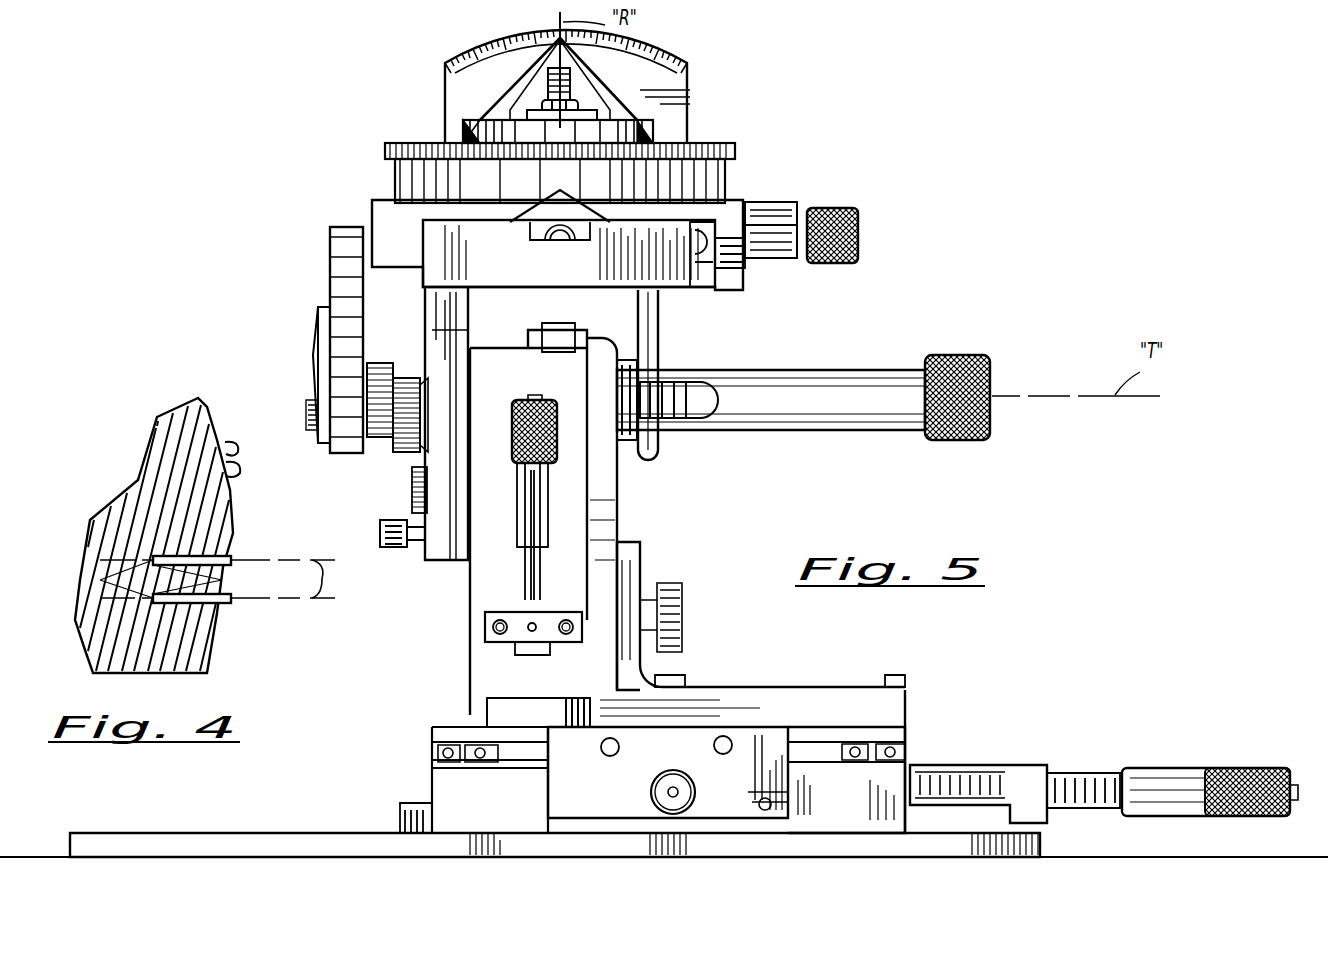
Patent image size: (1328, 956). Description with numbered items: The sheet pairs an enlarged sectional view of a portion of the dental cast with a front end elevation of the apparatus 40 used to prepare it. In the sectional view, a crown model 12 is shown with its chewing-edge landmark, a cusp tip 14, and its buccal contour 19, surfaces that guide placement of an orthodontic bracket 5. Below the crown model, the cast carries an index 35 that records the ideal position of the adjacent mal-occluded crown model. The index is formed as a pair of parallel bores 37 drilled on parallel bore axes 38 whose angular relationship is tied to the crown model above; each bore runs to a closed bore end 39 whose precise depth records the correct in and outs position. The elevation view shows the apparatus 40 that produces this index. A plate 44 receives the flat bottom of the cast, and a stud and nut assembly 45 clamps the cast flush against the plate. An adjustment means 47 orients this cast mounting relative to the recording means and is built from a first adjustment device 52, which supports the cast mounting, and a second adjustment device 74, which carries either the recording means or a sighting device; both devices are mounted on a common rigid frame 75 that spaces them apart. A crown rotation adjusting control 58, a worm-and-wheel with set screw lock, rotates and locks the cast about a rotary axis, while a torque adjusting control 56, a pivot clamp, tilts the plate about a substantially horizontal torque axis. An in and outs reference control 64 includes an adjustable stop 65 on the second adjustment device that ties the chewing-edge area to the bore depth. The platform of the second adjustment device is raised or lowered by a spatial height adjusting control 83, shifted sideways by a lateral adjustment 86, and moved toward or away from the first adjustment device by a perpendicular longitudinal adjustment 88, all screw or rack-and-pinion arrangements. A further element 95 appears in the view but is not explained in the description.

In FIG. 4, the orthodontic bracket 5 is at (247, 468).
In FIG. 4, the crown model 12 is at (217, 407).
In FIG. 4, the cusp tip 14 is at (198, 400).
In FIG. 4, the buccal contour 19 is at (217, 433).
In FIG. 4, the index 35 is at (230, 612).
In FIG. 4, the bore 37 is at (222, 580).
In FIG. 4, the bore axes 38 is at (229, 579).
In FIG. 4, the closed bore end 39 is at (100, 580).
In FIG. 5, the apparatus 40 is at (903, 302).
In FIG. 5, the plate 44 is at (512, 110).
In FIG. 5, the stud and nut assembly 45 is at (580, 108).
In FIG. 5, the adjustment means 47 is at (637, 493).
In FIG. 5, the first adjustment device 52 is at (755, 186).
In FIG. 5, the torque adjusting control 56 is at (993, 390).
In FIG. 5, the crown rotation adjusting control 58 is at (860, 223).
In FIG. 5, the in and outs reference control 64 is at (722, 298).
In FIG. 5, the adjustable stop 65 is at (715, 272).
In FIG. 5, the second adjustment device 74 is at (683, 297).
In FIG. 5, the rigid frame 75 is at (250, 833).
In FIG. 5, the spatial height adjusting control 83 is at (513, 425).
In FIG. 5, the lateral adjustment 86 is at (1100, 777).
In FIG. 5, the longitudinal adjustment 88 is at (690, 792).
In FIG. 5, the pivot 95 is at (698, 240).